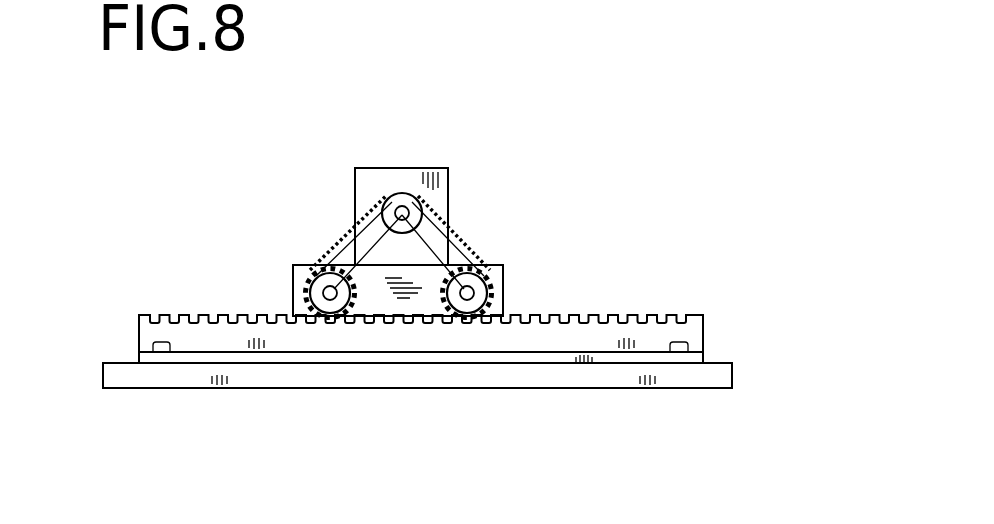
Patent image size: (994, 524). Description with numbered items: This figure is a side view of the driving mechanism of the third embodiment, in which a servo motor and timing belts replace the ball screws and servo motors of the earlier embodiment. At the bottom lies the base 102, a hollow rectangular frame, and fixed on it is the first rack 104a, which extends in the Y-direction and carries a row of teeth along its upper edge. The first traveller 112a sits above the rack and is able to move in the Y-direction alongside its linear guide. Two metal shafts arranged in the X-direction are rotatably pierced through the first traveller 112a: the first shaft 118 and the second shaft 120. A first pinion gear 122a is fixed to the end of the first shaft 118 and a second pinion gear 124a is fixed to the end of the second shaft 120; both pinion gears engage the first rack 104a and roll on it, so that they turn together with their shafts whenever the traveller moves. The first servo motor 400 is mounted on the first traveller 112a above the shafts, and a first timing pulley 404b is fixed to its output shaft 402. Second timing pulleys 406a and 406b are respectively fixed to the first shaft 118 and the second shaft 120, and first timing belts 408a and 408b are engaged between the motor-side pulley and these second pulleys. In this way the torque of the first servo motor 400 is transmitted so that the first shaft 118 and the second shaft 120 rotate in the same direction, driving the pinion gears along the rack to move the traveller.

The base 102 is at (117, 388).
The first rack 104a is at (704, 341).
The first traveller 112a is at (503, 265).
The first shaft 118 is at (467, 293).
The second shaft 120 is at (330, 293).
The first pinion gear 122a is at (503, 303).
The second pinion gear 124a is at (305, 290).
The first servo motor 400 is at (428, 168).
The output shaft 402 is at (402, 213).
The first timing pulley 404b is at (388, 205).
The second timing pulley 406a is at (493, 293).
The second timing pulley 406b is at (320, 305).
The first timing belt 408a is at (455, 252).
The first timing belt 408b is at (362, 250).